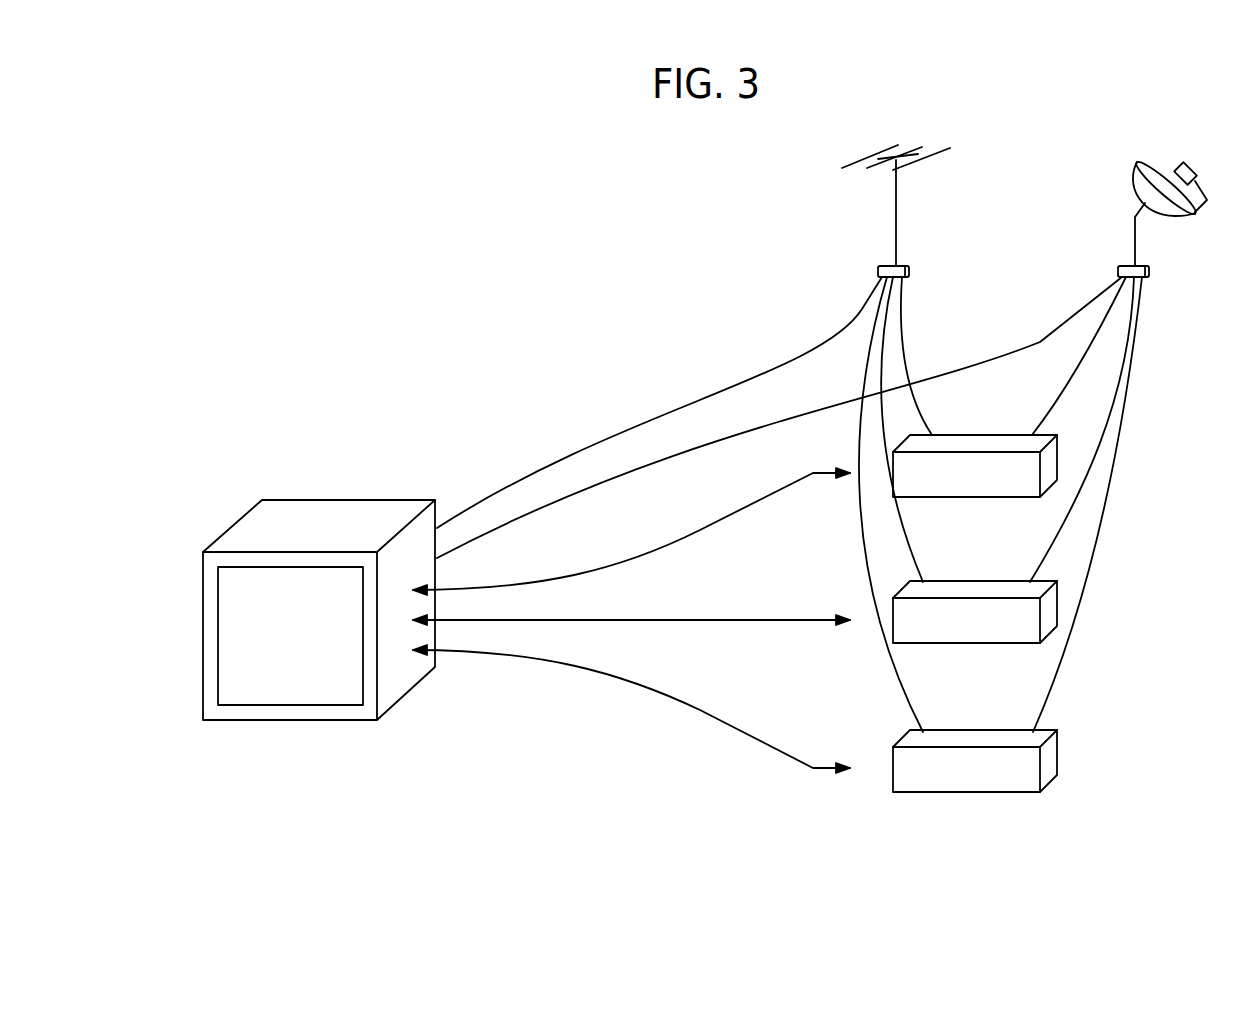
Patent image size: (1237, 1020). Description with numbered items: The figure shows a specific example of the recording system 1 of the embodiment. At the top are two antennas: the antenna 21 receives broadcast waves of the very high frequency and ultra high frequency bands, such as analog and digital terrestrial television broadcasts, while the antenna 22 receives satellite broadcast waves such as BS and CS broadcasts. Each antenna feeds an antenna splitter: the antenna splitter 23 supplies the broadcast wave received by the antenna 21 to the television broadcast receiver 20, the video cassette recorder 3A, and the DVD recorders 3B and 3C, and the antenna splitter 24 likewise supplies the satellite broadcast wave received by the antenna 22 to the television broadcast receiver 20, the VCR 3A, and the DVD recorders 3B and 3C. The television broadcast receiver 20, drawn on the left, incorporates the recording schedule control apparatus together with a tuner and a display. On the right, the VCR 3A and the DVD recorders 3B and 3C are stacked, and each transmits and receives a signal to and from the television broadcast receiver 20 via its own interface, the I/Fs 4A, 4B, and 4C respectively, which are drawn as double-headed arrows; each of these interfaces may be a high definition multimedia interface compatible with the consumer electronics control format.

The recording system 1 is at (483, 190).
The television broadcast receiver 20 is at (355, 500).
The antenna 21 is at (852, 162).
The antenna 22 is at (1142, 160).
The antenna splitter 23 is at (912, 268).
The antenna splitter 24 is at (1152, 268).
The video cassette recorder 3A is at (980, 435).
The DVD recorder 3B is at (982, 581).
The DVD recorder 3C is at (982, 730).
The I/F 4A is at (718, 522).
The I/F 4B is at (716, 620).
The I/F 4C is at (718, 716).